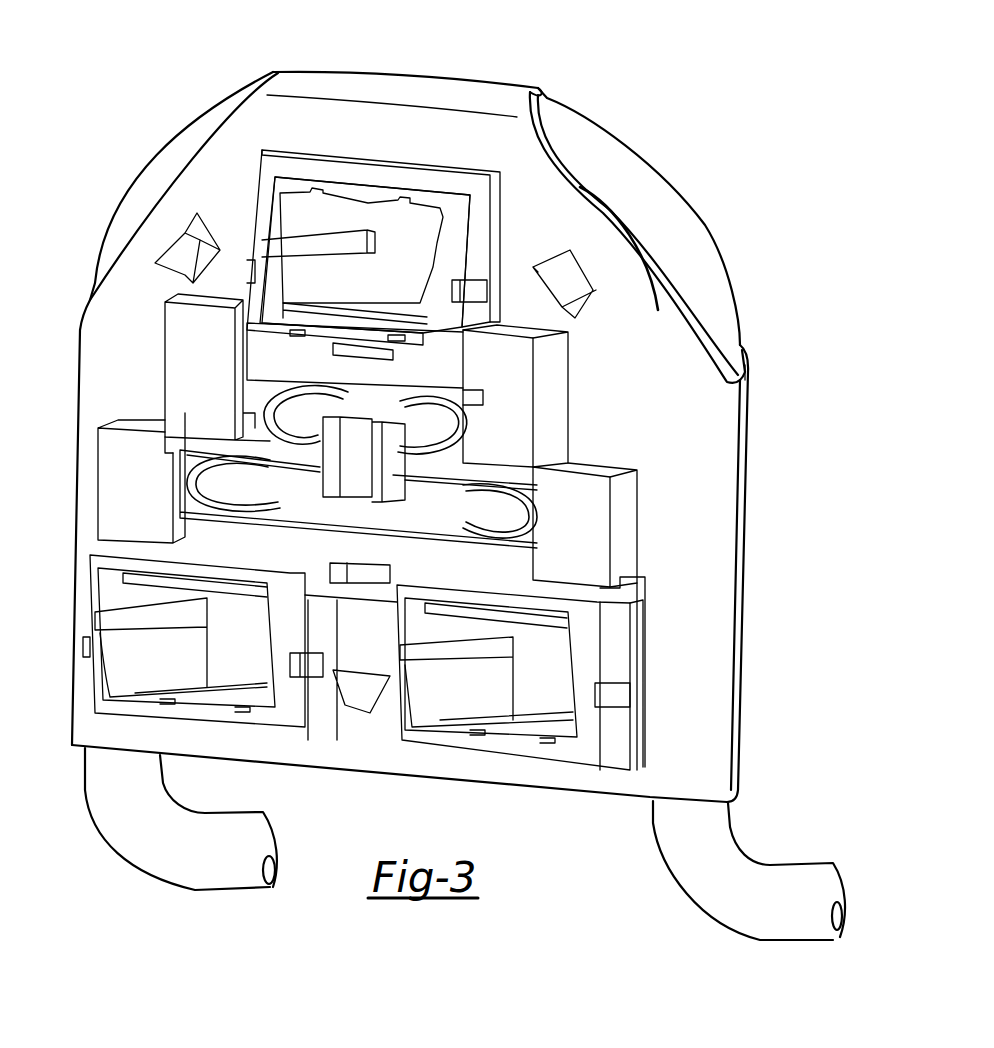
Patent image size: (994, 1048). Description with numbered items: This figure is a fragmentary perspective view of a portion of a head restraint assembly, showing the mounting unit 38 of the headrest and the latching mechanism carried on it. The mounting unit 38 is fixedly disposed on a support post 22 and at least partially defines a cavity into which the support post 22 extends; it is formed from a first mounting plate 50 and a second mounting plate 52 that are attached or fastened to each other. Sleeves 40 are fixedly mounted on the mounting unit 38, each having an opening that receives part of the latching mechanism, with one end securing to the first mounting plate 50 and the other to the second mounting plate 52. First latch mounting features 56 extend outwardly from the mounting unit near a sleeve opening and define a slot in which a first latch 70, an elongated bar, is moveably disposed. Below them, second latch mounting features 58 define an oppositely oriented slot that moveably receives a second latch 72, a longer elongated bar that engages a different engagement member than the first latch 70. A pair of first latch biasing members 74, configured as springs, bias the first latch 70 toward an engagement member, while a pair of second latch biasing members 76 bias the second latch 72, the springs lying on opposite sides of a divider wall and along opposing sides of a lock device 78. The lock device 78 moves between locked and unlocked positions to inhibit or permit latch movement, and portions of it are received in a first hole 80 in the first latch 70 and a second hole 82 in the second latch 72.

The support post 22 is at (628, 140).
The mounting unit 38 is at (392, 90).
The sleeve 40 is at (90, 655).
The first mounting plate 50 is at (716, 635).
The second mounting plate 52 is at (748, 428).
The first latch mounting feature 56 is at (524, 400).
The second latch mounting feature 58 is at (575, 518).
The first latch 70 is at (296, 363).
The second latch 72 is at (246, 553).
The first latch biasing member 74 is at (405, 402).
The second latch biasing member 76 is at (210, 493).
The lock device 78 is at (357, 507).
The first hole 80 is at (368, 355).
The second hole 82 is at (364, 563).